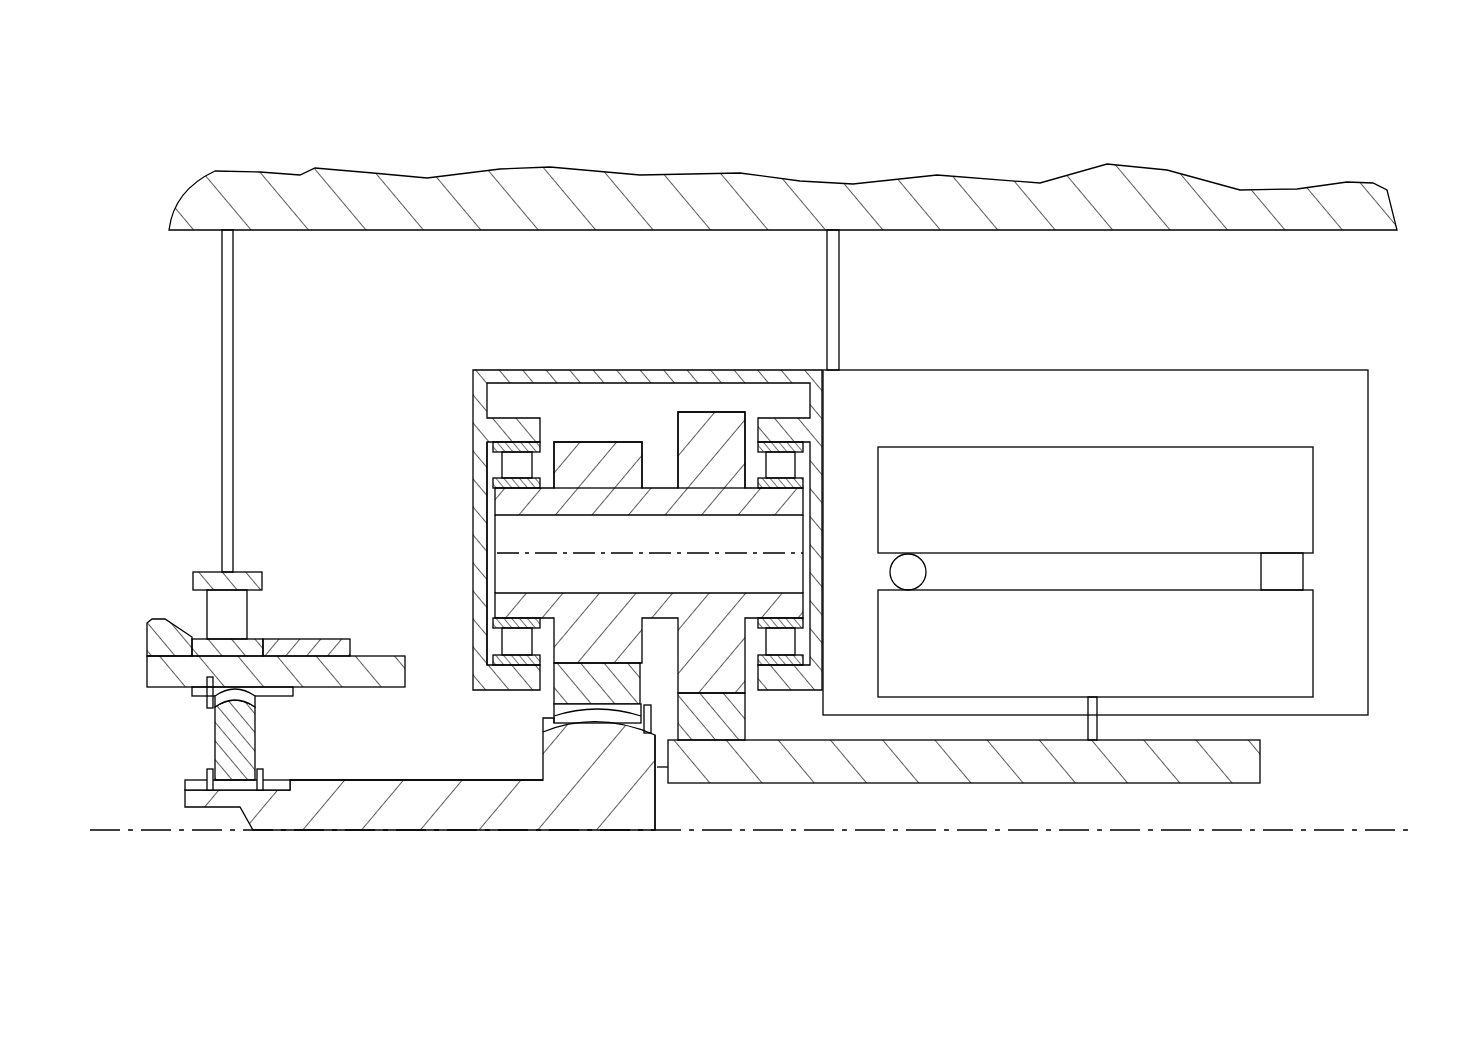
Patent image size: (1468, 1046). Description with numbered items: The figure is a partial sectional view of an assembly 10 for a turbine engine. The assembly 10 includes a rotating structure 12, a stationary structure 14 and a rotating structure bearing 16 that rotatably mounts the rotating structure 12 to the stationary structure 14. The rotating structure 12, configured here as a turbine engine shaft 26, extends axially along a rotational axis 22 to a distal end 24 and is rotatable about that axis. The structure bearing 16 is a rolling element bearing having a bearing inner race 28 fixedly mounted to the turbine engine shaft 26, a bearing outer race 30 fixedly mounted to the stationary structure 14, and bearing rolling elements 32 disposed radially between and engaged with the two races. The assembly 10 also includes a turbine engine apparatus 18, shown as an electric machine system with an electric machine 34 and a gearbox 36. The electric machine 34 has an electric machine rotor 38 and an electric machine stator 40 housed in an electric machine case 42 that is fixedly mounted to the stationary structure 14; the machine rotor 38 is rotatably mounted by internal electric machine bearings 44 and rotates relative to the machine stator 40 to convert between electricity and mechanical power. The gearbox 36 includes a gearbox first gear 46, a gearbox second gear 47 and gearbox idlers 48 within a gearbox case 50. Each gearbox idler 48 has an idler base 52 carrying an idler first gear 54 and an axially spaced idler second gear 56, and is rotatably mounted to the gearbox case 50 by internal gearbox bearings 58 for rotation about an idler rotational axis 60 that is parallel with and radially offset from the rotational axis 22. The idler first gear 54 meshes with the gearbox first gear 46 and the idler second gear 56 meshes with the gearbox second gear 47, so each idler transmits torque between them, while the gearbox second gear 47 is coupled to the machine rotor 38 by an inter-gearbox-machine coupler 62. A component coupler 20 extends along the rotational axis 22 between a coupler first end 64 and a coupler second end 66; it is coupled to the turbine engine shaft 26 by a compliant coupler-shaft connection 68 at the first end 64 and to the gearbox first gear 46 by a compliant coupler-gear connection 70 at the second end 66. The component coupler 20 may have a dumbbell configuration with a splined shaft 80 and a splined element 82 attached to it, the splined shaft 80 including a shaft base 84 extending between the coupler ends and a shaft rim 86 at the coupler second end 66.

The assembly 10 is at (211, 149).
The rotating structure 12 is at (256, 469).
The stationary structure 14 is at (507, 168).
The rotating structure bearing 16 is at (272, 603).
The turbine engine apparatus 18 is at (644, 527).
The component coupler 20 is at (418, 811).
The rotational axis 22 is at (1395, 836).
The distal end 24 is at (405, 668).
The turbine engine shaft 26 is at (148, 670).
The bearing inner race 28 is at (260, 638).
The bearing outer race 30 is at (248, 573).
The bearing rolling elements 32 is at (207, 621).
The electric machine 34 is at (1057, 580).
The gearbox 36 is at (612, 369).
The electric machine rotor 38 is at (1313, 640).
The electric machine stator 40 is at (1313, 504).
The electric machine case 42 is at (1370, 423).
The internal electric machine bearings 44 is at (890, 573).
The gearbox first gear 46 is at (546, 690).
The gearbox second gear 47 is at (760, 720).
The gearbox idlers 48 is at (484, 500).
The gearbox case 50 is at (750, 369).
The idler base 52 is at (526, 522).
The idler first gear 54 is at (578, 438).
The idler second gear 56 is at (715, 408).
The internal gearbox bearings 58 is at (495, 460).
The idler rotational axis 60 is at (605, 553).
The inter-gearbox-machine coupler 62 is at (1260, 768).
The coupler first end 64 is at (185, 795).
The coupler second end 66 is at (655, 826).
The compliant coupler-shaft connection 68 is at (267, 706).
The compliant coupler-gear connection 70 is at (538, 731).
The splined shaft 80 is at (321, 841).
The splined element 82 is at (237, 734).
The shaft base 84 is at (478, 830).
The shaft rim 86 is at (660, 767).